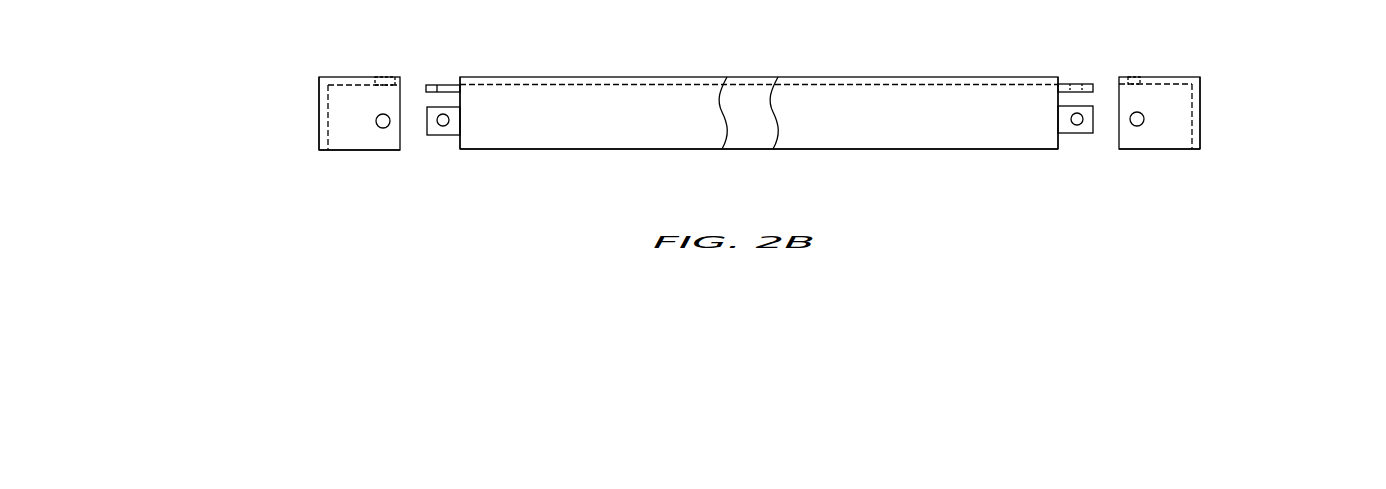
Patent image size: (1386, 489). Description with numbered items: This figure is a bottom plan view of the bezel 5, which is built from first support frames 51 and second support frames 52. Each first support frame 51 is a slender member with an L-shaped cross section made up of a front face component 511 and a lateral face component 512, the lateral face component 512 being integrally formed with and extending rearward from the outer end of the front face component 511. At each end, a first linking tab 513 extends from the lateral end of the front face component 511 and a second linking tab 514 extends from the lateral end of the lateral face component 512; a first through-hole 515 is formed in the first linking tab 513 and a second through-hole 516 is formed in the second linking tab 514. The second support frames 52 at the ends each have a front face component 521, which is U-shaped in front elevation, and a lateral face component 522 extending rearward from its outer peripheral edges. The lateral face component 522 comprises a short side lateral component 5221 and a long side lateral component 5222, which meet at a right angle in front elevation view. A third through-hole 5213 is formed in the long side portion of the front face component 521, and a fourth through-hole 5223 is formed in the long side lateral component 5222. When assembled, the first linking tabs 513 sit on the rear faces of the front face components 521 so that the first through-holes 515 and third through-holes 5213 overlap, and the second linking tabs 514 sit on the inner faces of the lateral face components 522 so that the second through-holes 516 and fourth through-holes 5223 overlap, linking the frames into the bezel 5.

The bezel 5 is at (284, 35).
The first support frame 51 is at (567, 77).
The front face component 511 is at (695, 78).
The lateral face component 512 is at (673, 149).
The first linking tab 513 is at (458, 82).
The second linking tab 514 is at (433, 137).
The first through-hole 515 is at (437, 85).
The second through-hole 516 is at (446, 124).
The second support frame 52 is at (319, 79).
The front face component 521 is at (347, 77).
The third through-hole 5213 is at (380, 76).
The lateral face component 522 is at (318, 107).
The short side lateral component 5221 is at (318, 126).
The long side lateral component 5222 is at (347, 137).
The fourth through-hole 5223 is at (385, 128).